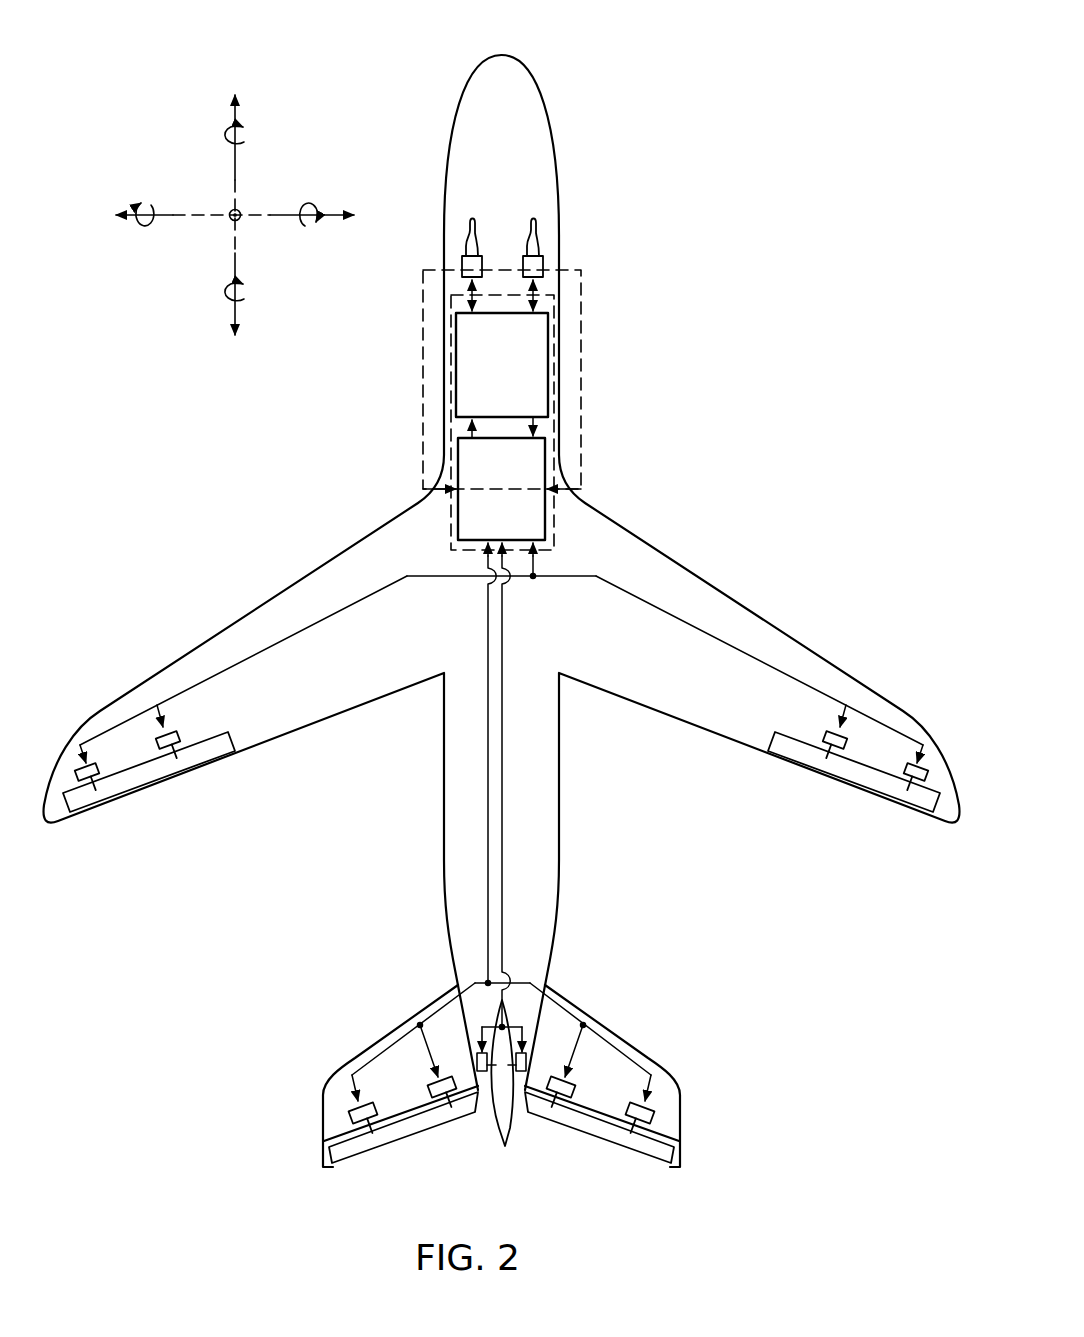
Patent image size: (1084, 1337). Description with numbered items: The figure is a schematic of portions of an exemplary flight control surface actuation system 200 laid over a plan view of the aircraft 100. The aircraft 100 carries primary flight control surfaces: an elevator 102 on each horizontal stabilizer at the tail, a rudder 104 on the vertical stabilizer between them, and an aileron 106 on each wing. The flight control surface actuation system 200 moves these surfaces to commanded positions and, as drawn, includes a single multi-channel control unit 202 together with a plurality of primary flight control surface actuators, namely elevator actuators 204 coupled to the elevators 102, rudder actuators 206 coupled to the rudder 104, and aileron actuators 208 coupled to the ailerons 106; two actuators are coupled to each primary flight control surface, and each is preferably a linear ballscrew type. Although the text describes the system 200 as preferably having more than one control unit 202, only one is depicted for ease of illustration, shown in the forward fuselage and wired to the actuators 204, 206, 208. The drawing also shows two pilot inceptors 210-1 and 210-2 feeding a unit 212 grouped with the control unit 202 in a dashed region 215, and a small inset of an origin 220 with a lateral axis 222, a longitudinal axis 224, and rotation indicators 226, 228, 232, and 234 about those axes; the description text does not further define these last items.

The aircraft 100 is at (533, 84).
The elevator 102 is at (333, 1164).
The rudder 104 is at (505, 1146).
The aileron 106 is at (221, 756).
The flight control surface actuation system 200 is at (509, 343).
The control unit 202 is at (541, 523).
The elevator actuator 204 is at (355, 1112).
The rudder actuator 206 is at (482, 1071).
The aileron actuator 208 is at (178, 738).
The first inceptor (joystick) 210-1 is at (465, 261).
The second inceptor (joystick) 210-2 is at (540, 261).
The motor control unit 212 is at (540, 343).
The inceptor control system 215 is at (538, 413).
The origin / aircraft reference point 220 is at (232, 220).
The lateral axis 222 is at (173, 215).
The longitudinal axis 224 is at (236, 168).
The roll rotation (left) 226 is at (142, 225).
The roll rotation (right) 228 is at (308, 226).
The pitch rotation (aft) 232 is at (222, 293).
The pitch rotation (forward) 234 is at (248, 134).